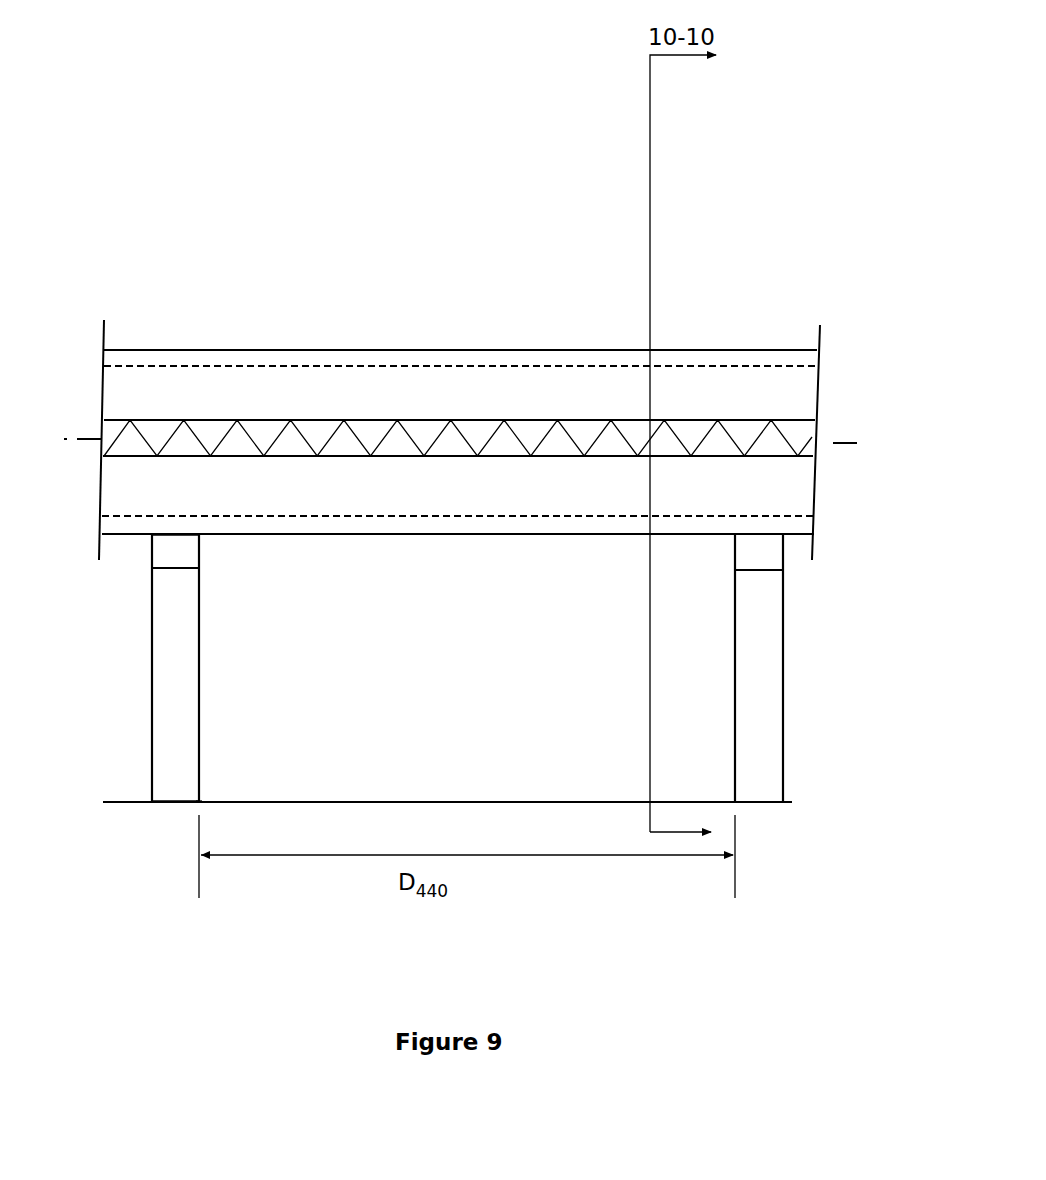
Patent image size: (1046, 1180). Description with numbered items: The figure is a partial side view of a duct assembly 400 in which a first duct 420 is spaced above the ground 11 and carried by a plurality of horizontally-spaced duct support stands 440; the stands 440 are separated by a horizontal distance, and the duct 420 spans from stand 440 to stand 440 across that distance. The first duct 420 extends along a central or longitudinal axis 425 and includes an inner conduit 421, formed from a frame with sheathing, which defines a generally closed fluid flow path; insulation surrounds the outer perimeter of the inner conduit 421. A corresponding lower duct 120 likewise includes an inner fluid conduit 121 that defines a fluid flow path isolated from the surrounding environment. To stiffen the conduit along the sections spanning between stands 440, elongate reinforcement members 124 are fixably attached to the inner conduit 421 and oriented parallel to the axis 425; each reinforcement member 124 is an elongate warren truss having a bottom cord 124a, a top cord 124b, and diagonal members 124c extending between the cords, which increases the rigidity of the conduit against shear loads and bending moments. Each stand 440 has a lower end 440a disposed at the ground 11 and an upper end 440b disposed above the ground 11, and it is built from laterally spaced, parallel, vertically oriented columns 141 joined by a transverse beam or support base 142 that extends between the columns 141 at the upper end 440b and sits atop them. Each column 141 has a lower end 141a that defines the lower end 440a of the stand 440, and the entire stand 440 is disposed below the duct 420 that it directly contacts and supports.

The duct assembly 400 is at (165, 225).
The first duct 420 is at (293, 348).
The inner conduit 421 is at (572, 368).
The central or longitudinal axis 425 is at (80, 438).
The reinforcement member 124 is at (459, 438).
The bottom cord 124a is at (462, 458).
The top cord 124b is at (480, 420).
The diagonal members 124c is at (265, 428).
The lower duct 120 is at (412, 535).
The inner fluid conduit 121 is at (265, 517).
The duct support stand 440 is at (415, 668).
The lower end 440a is at (175, 797).
The upper end 440b is at (150, 538).
The column 141 is at (185, 710).
The lower end 141a is at (288, 770).
The transverse beam or support base 142 is at (187, 550).
The ground 11 is at (606, 796).